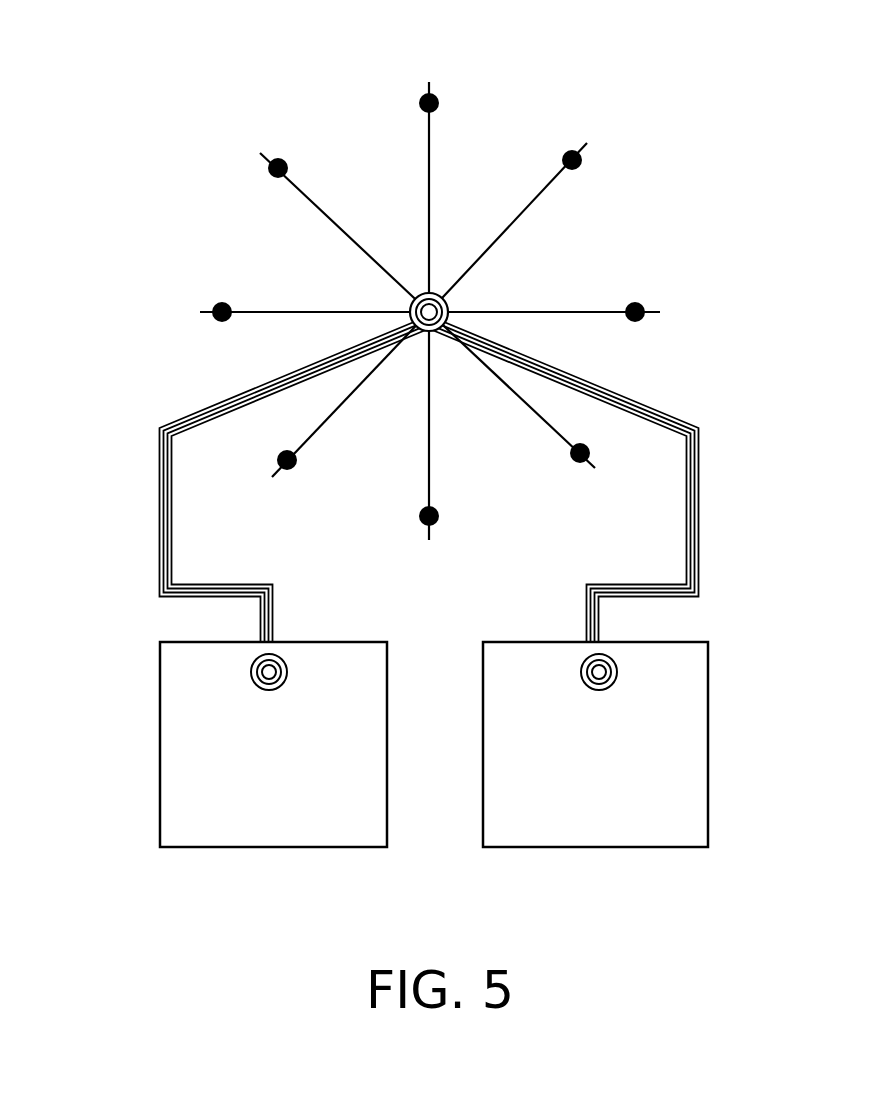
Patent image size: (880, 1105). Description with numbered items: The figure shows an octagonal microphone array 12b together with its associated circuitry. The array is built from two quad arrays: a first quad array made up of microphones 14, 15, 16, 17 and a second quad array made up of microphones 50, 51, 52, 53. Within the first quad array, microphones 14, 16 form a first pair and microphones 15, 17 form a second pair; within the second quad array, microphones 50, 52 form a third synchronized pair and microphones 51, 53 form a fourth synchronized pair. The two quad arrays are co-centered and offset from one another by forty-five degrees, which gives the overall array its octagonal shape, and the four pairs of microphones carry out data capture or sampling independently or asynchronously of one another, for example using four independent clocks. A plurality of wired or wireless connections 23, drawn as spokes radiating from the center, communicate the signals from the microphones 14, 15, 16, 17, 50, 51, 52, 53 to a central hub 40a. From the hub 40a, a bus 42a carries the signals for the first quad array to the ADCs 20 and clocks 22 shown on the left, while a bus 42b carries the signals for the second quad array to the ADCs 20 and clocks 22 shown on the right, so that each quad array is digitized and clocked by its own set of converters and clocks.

The octagonal microphone array 12b is at (170, 98).
The microphone 14 is at (220, 320).
The microphone 15 is at (435, 523).
The microphone 16 is at (636, 321).
The microphone 17 is at (433, 95).
The ADCs 20 is at (434, 744).
The clocks 22 is at (483, 790).
The wired or wireless connections 23 is at (340, 223).
The hub 40a is at (437, 294).
The bus 42a is at (158, 513).
The bus 42b is at (700, 513).
The microphone 50 is at (297, 462).
The microphone 51 is at (592, 453).
The microphone 52 is at (579, 165).
The microphone 53 is at (273, 180).